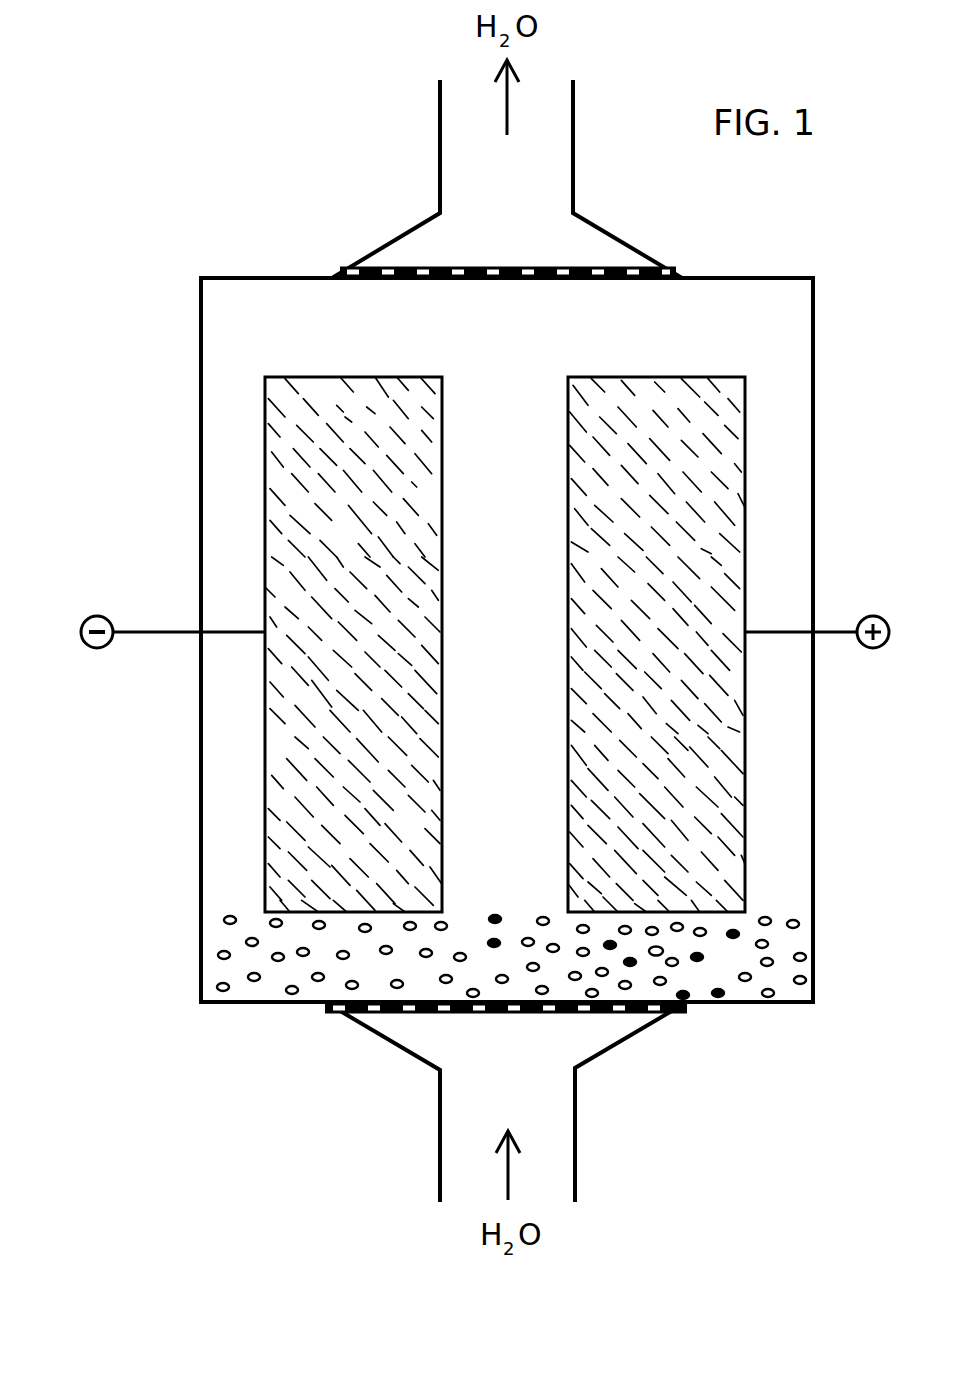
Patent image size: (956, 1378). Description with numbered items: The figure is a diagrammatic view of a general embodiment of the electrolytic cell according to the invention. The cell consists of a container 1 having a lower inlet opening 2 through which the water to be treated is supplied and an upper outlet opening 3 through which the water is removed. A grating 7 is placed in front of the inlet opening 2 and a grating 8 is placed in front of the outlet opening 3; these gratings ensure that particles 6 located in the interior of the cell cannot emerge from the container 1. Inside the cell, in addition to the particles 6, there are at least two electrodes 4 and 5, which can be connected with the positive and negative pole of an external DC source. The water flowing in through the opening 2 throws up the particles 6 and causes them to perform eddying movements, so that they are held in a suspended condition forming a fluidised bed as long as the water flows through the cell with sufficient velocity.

The container 1 is at (813, 407).
The lower inlet opening 2 is at (565, 1044).
The upper outlet opening 3 is at (587, 246).
The electrode 4 is at (282, 750).
The electrode 5 is at (728, 834).
The particles 6 is at (803, 956).
The grating 7 is at (633, 1008).
The grating 8 is at (420, 272).